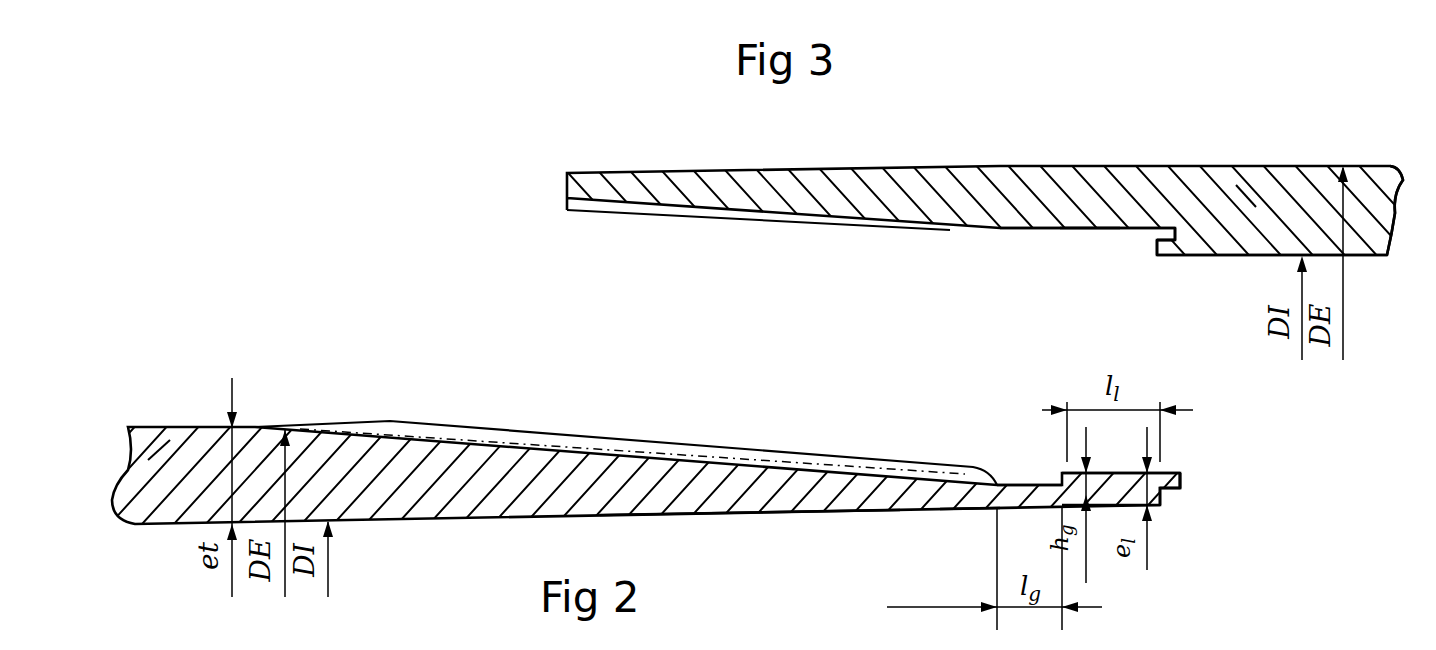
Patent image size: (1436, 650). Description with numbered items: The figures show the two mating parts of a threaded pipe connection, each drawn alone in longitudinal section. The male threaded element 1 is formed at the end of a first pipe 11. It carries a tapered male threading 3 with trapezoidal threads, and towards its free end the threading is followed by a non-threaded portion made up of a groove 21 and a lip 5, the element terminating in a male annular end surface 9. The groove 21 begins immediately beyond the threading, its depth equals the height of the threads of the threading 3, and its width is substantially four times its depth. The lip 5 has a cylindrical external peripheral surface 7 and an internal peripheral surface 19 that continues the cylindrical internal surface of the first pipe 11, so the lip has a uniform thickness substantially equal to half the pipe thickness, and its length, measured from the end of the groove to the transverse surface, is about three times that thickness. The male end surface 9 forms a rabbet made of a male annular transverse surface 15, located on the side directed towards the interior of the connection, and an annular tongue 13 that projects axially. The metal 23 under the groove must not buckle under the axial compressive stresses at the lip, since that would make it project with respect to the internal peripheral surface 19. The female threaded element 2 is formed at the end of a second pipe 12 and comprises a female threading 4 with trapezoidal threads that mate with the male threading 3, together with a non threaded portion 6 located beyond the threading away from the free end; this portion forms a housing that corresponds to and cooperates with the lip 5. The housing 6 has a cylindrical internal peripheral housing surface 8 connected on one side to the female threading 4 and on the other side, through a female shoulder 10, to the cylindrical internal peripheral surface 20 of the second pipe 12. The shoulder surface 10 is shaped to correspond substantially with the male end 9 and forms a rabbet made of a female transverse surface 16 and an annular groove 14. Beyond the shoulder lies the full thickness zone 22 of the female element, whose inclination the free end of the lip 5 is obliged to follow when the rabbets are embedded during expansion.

In FIG. 2, the male threaded element 1 is at (705, 440).
In FIG. 3, the female threaded element 2 is at (1030, 156).
In FIG. 2, the male threading 3 is at (477, 437).
In FIG. 3, the female threading 4 is at (730, 215).
In FIG. 2, the lip 5 is at (1100, 493).
In FIG. 3, the non threaded portion (female housing) 6 is at (1092, 232).
In FIG. 2, the external peripheral surface 7 is at (1123, 472).
In FIG. 3, the internal peripheral housing surface 8 is at (1075, 232).
In FIG. 2, the male annular end surface 9 is at (1184, 483).
In FIG. 3, the female shoulder / annular shoulder surface 10 is at (1138, 245).
In FIG. 2, the first pipe 11 is at (158, 450).
In FIG. 3, the second pipe 12 is at (1307, 183).
In FIG. 2, the annular tongue 13 is at (1186, 468).
In FIG. 3, the annular groove 14 is at (1152, 223).
In FIG. 2, the male annular transverse surface 15 is at (1166, 497).
In FIG. 3, the female transverse surface 16 is at (1147, 258).
In FIG. 2, the internal peripheral surface 19 is at (745, 512).
In FIG. 3, the cylindrical internal peripheral surface 20 is at (1237, 257).
In FIG. 2, the groove 21 is at (1020, 484).
In FIG. 3, the full thickness zone 22 is at (1227, 190).
In FIG. 2, the metal under the groove 23 is at (978, 509).